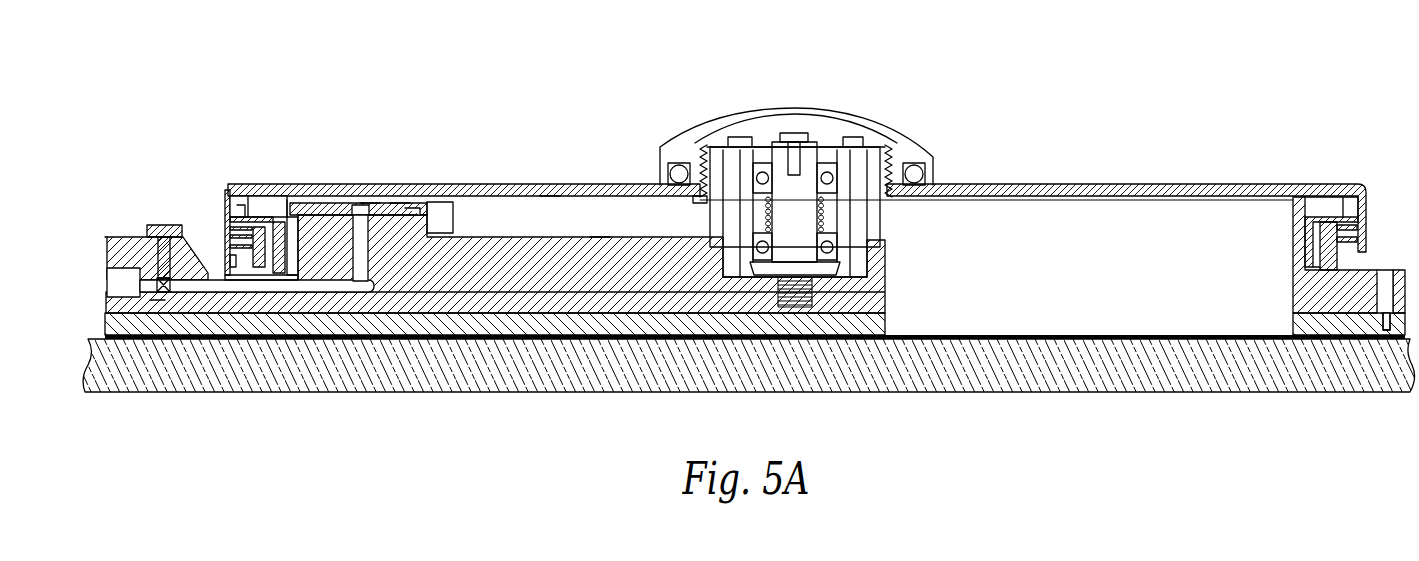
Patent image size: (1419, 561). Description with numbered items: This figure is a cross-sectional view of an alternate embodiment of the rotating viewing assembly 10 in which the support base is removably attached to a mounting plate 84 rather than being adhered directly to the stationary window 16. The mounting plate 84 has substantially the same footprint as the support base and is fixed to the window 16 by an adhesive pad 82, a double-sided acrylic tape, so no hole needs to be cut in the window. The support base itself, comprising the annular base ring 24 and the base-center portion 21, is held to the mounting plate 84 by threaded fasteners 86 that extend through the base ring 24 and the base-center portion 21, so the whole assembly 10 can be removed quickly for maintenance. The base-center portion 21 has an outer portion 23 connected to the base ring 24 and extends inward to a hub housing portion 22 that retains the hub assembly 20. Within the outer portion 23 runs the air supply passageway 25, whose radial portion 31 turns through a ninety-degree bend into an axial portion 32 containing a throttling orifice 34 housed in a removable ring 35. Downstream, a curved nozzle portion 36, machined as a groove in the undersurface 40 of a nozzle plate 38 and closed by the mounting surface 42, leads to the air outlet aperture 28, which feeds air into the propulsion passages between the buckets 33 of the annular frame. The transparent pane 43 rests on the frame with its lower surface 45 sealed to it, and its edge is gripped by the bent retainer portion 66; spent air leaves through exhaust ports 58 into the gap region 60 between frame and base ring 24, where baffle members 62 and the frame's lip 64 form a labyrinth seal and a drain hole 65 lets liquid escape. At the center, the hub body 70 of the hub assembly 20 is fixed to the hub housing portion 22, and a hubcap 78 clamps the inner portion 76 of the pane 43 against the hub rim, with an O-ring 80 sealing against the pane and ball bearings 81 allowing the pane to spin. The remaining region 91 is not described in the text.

The rotating viewing assembly 10 is at (155, 168).
The stationary window 16 is at (447, 383).
The hub assembly 20 is at (783, 234).
The base-center portion 21 is at (530, 236).
The hub housing portion 22 is at (847, 302).
The outer portion 23 is at (157, 302).
The annular base ring 24 is at (1327, 328).
The air supply passageway 25 is at (335, 314).
The air outlet aperture 28 is at (291, 203).
The radial portion 31 is at (113, 280).
The axial portion 32 is at (368, 262).
The buckets 33 is at (276, 207).
The throttling orifice 34 is at (363, 212).
The ring 35 is at (368, 210).
The curved nozzle portion 36 is at (337, 200).
The nozzle plate 38 is at (418, 205).
The undersurface 40 is at (397, 203).
The mounting surface 42 is at (453, 218).
The pane 43 is at (503, 190).
The lower surface 45 is at (547, 197).
The exhaust ports 58 is at (232, 219).
The gap region 60 is at (232, 237).
The baffle members 62 is at (250, 262).
The lip 64 is at (222, 260).
The drain hole 65 is at (280, 262).
The retainer portion 66 is at (224, 277).
The hub body 70 is at (729, 143).
The inner portion 76 is at (692, 146).
The hubcap 78 is at (907, 147).
The O-ring 80 is at (667, 172).
The ball bearings 81 is at (830, 172).
The adhesive pad 82 is at (570, 338).
The mounting plate 84 is at (103, 322).
The threaded fasteners 86 is at (125, 236).
The cavity 91 is at (600, 298).